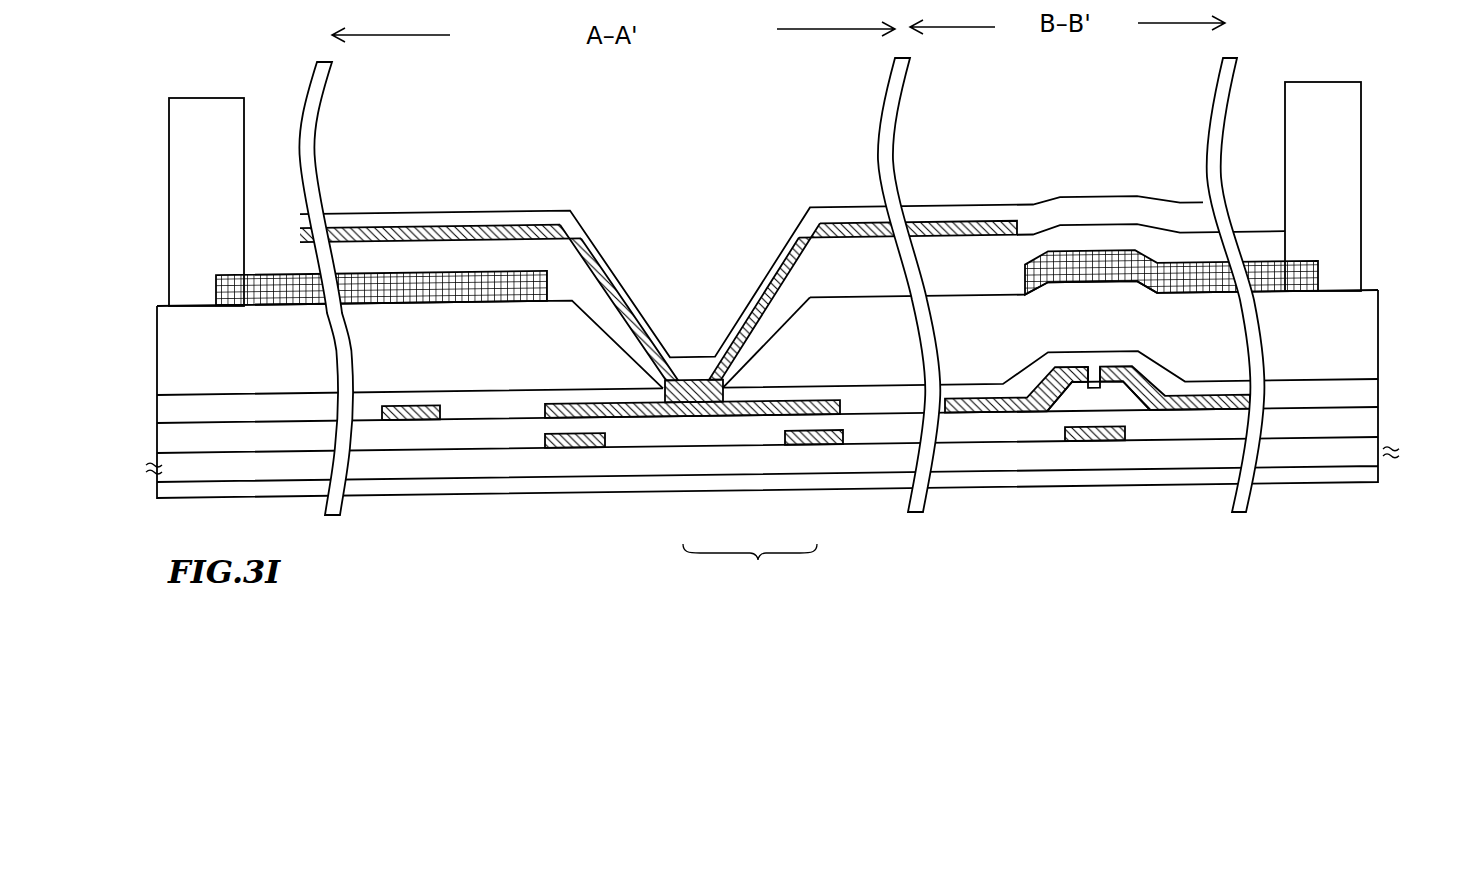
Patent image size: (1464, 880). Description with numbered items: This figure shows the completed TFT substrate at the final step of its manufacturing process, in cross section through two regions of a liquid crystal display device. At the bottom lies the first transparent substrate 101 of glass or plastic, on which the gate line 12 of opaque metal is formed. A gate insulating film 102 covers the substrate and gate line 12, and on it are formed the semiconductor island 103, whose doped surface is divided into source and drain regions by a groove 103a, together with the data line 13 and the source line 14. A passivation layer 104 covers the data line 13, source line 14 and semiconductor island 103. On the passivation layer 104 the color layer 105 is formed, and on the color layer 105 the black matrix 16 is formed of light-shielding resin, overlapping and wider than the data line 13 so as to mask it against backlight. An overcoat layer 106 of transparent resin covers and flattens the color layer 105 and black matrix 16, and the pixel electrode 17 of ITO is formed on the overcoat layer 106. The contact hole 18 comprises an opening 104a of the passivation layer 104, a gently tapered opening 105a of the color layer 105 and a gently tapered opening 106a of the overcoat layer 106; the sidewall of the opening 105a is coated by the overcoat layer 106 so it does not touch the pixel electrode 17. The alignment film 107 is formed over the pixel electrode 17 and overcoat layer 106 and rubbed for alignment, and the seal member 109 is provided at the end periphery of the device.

The first transparent substrate 101 is at (1313, 450).
The gate insulating film 102 is at (1347, 422).
The semiconductor island 103 is at (1113, 390).
The groove 103a is at (1090, 367).
The passivation layer 104 is at (1318, 388).
The opening of passivation layer 104a is at (713, 390).
The color layer 105 is at (1318, 345).
The opening of color layer 105a is at (795, 317).
The overcoat layer 106 is at (1160, 242).
The opening of overcoat layer 106a is at (783, 317).
The alignment film 107 is at (495, 215).
The seal member 109 is at (207, 163).
The gate line 12 is at (577, 443).
The data line 13 is at (412, 422).
The source line 14 is at (630, 413).
The black matrix 16 is at (255, 285).
The pixel electrode 17 is at (597, 285).
The contact hole 18 is at (750, 566).